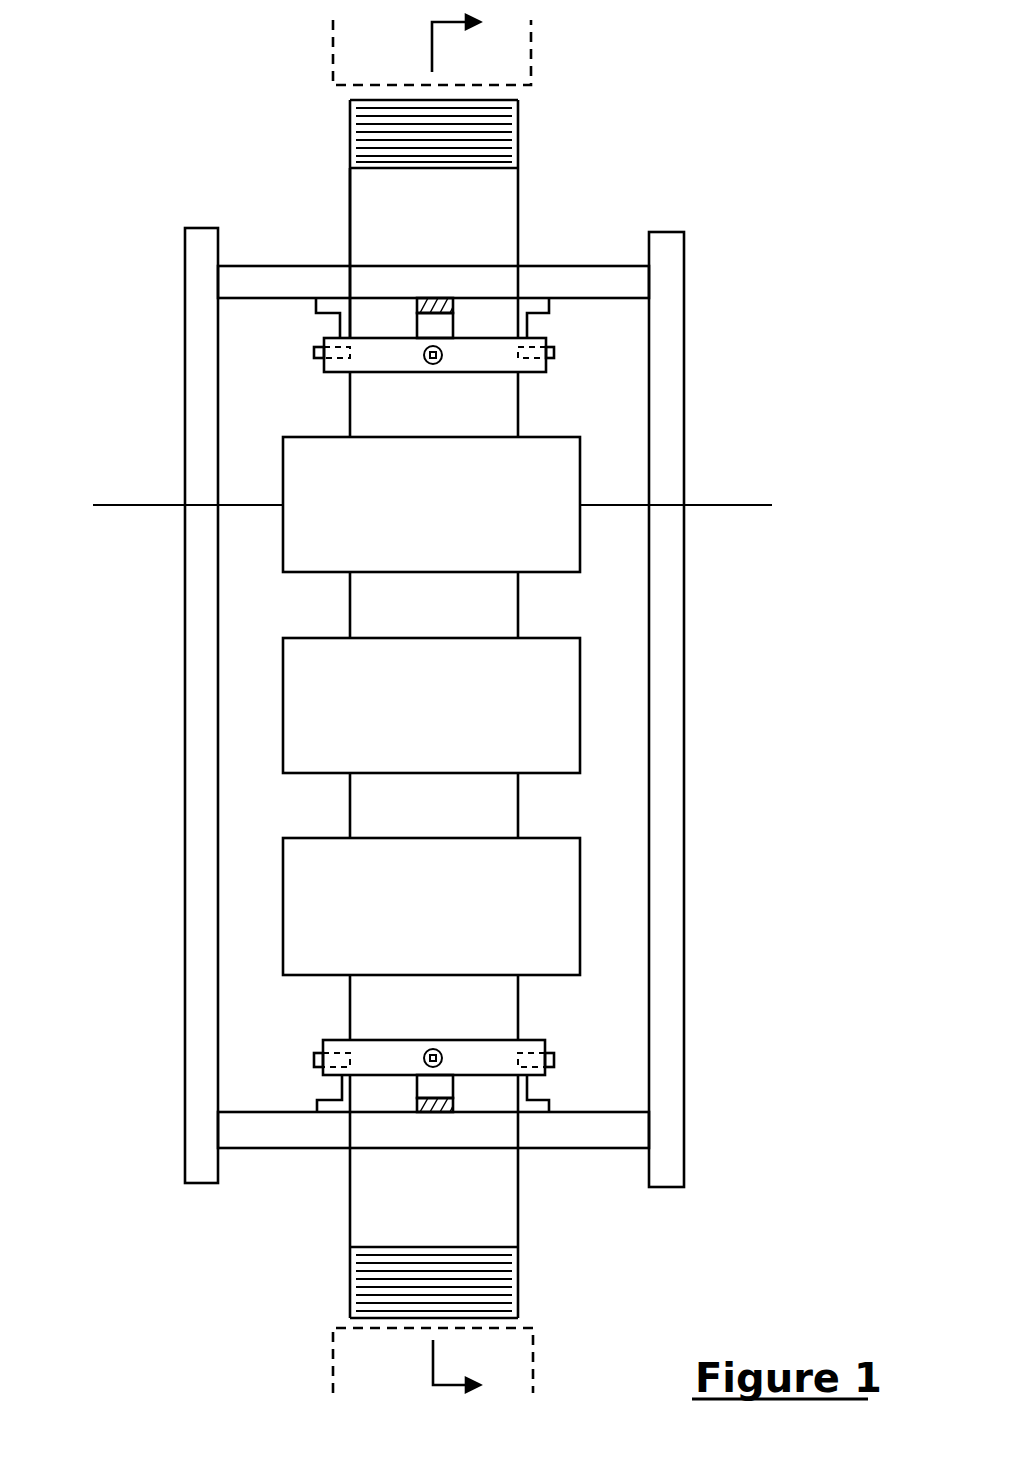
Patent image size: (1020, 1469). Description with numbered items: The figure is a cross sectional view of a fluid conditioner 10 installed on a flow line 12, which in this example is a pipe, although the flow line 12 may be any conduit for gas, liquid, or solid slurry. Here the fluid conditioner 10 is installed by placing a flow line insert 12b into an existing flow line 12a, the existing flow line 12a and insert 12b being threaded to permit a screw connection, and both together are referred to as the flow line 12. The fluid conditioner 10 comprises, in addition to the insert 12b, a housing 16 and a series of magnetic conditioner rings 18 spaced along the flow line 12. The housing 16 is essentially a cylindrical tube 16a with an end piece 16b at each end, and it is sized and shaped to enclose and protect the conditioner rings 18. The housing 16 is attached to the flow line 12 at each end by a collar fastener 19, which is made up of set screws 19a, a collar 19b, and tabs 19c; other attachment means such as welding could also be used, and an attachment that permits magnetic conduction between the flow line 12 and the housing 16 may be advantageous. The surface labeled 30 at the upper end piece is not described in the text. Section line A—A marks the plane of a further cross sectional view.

The fluid conditioner 10 is at (718, 312).
The flow line 12 is at (317, 23).
The existing flow line 12a is at (533, 80).
The flow line insert 12b is at (518, 218).
The housing 16 is at (442, 778).
The cylindrical tube 16a is at (198, 697).
The end piece 16b is at (405, 693).
The magnetic conditioner rings 18 is at (545, 572).
The collar fastener 19 is at (378, 1055).
The set screws 19a is at (315, 357).
The collar 19b is at (397, 358).
The tabs 19c is at (333, 305).
The cross member surface 30 is at (540, 266).